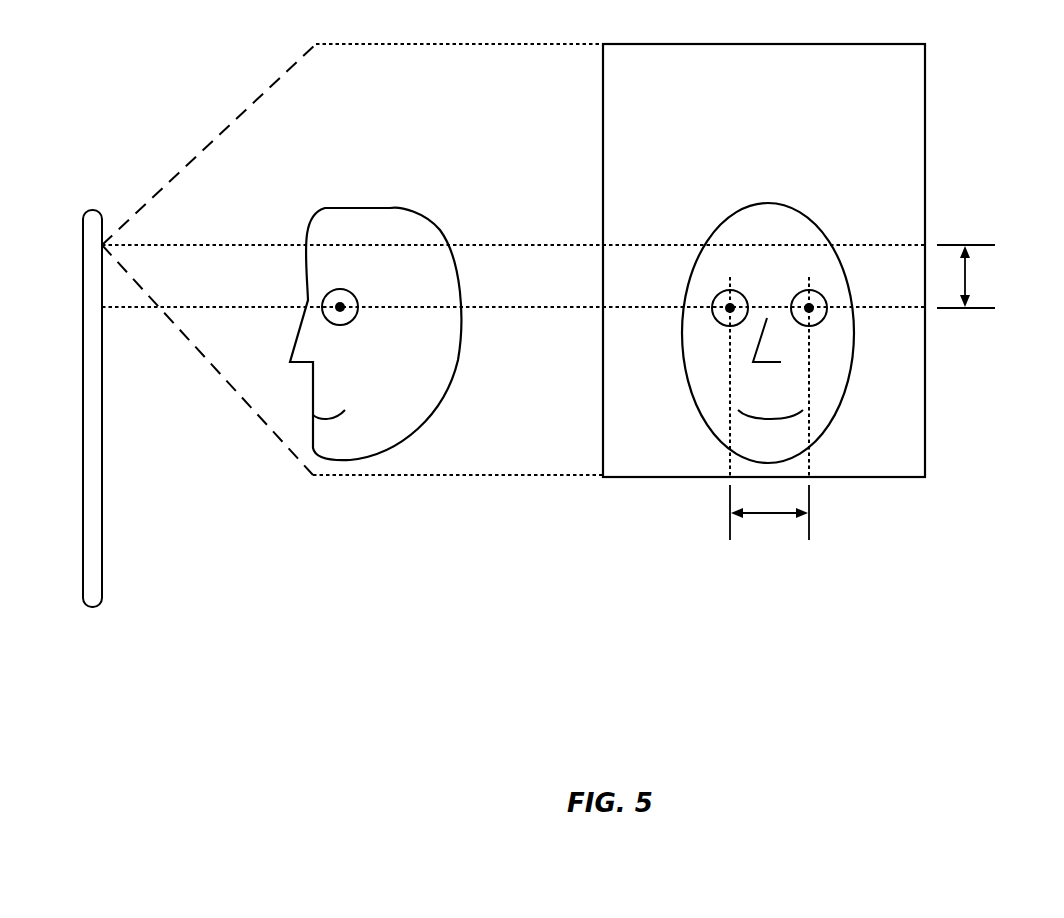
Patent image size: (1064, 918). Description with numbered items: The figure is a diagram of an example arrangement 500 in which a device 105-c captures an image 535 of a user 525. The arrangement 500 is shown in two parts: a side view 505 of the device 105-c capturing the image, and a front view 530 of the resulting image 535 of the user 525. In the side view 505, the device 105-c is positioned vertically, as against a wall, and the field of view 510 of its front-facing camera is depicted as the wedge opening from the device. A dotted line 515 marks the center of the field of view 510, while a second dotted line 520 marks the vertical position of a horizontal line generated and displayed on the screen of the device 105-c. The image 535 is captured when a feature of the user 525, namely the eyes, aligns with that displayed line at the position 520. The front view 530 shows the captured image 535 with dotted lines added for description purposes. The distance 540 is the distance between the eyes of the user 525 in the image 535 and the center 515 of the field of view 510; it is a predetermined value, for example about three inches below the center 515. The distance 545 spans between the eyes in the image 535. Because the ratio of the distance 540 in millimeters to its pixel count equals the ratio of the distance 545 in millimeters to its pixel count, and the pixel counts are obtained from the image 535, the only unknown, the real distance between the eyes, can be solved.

The arrangement 500 is at (160, 102).
The device 105-c is at (102, 505).
The field of view 510 is at (225, 128).
The dotted line (center of field of view) 515 is at (183, 245).
The dotted line (position of generated line) 520 is at (205, 307).
The user 525 is at (392, 209).
The side view 505 is at (438, 600).
The front view 530 is at (625, 600).
The image 535 is at (910, 122).
The distance 540 is at (990, 277).
The distance 545 is at (768, 535).